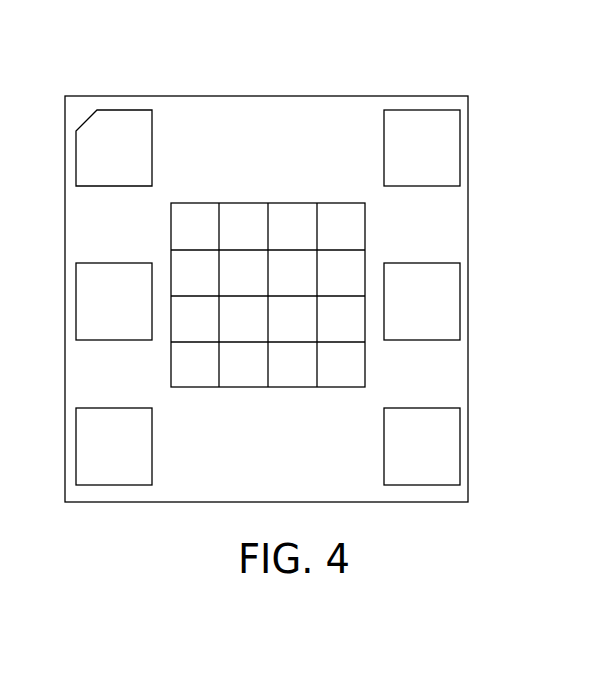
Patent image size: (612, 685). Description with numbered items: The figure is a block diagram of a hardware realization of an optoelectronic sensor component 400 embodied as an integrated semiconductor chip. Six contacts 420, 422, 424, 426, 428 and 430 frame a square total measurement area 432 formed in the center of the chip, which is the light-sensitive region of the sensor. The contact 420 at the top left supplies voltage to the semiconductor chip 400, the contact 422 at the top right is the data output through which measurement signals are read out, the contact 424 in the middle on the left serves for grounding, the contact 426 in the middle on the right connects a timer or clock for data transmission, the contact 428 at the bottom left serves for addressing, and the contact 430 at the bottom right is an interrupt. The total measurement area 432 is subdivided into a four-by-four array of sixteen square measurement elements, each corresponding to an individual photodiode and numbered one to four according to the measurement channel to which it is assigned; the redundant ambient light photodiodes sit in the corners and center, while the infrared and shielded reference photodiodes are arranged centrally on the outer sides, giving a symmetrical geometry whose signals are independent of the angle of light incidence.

The optoelectronic sensor component 400 is at (268, 78).
The contact 420 is at (136, 162).
The contact 422 is at (444, 162).
The contact 424 is at (136, 314).
The contact 426 is at (444, 314).
The contact 428 is at (136, 459).
The contact 430 is at (444, 459).
The total measurement area 432 is at (244, 393).